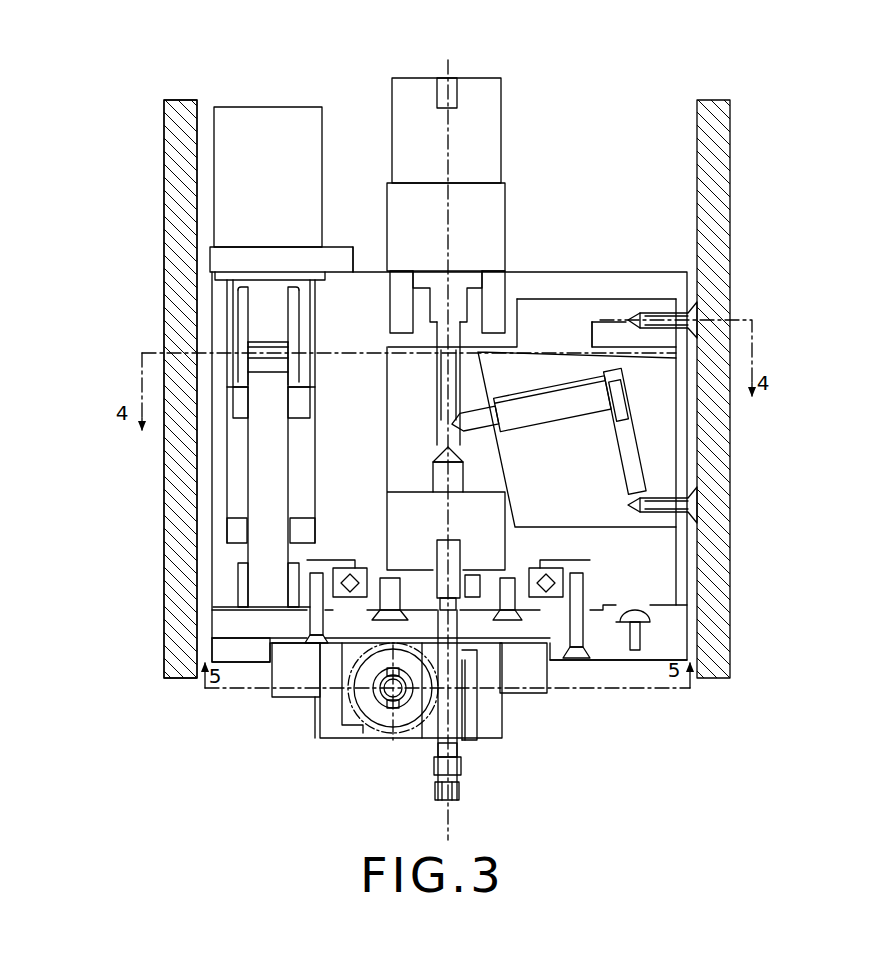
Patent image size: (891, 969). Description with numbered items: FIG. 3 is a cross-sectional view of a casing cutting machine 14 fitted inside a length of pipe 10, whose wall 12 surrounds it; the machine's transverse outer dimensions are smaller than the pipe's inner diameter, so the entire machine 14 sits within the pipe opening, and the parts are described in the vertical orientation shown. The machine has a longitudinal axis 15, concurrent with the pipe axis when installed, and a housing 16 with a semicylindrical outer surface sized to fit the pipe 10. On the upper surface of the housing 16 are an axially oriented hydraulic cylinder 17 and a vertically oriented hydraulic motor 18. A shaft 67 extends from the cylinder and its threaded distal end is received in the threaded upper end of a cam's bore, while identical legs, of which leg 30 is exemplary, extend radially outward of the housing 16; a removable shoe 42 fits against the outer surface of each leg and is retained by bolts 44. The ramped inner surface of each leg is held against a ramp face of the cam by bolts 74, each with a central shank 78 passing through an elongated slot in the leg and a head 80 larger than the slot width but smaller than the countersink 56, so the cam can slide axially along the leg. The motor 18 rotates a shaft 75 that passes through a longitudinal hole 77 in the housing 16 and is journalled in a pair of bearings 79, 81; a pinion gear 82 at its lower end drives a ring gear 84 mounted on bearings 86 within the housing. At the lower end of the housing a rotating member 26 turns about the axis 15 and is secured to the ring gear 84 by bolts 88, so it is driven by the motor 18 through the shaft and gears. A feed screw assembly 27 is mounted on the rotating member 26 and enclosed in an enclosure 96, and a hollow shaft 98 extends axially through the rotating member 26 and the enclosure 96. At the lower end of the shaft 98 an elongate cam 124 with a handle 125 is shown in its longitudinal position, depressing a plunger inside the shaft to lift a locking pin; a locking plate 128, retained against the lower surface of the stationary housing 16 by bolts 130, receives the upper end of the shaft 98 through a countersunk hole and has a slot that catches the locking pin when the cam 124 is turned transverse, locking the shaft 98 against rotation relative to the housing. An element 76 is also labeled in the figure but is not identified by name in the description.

The length of pipe 10 is at (181, 108).
The wall 12 is at (198, 155).
The casing cutting machine 14 is at (567, 183).
The longitudinal axis 15 is at (447, 147).
The housing 16 is at (608, 280).
The hydraulic cylinder 17 is at (488, 120).
The hydraulic motor 18 is at (288, 120).
The rotating member 26 is at (645, 648).
The feed screw assembly 27 is at (528, 700).
The leg 30 is at (613, 345).
The removable shoe 42 is at (688, 298).
The bolts 44 is at (658, 508).
The countersink 56 is at (385, 425).
The shaft 67 is at (437, 323).
The bolts 74 is at (633, 442).
The shaft 75 is at (227, 543).
The pin 76 is at (483, 430).
The longitudinal hole 77 is at (265, 493).
The central shank 78 is at (562, 427).
The bearing 79 is at (238, 407).
The head 80 is at (627, 403).
The bearing 81 is at (238, 590).
The pinion gear 82 is at (243, 600).
The ring gear 84 is at (305, 585).
The bearings 86 is at (345, 600).
The bolts 88 is at (390, 607).
The enclosure 96 is at (328, 740).
The hollow shaft 98 is at (462, 703).
The elongate cam 124 is at (457, 777).
The handle 125 is at (433, 795).
The locking plate 128 is at (530, 610).
The bolts 130 is at (508, 613).